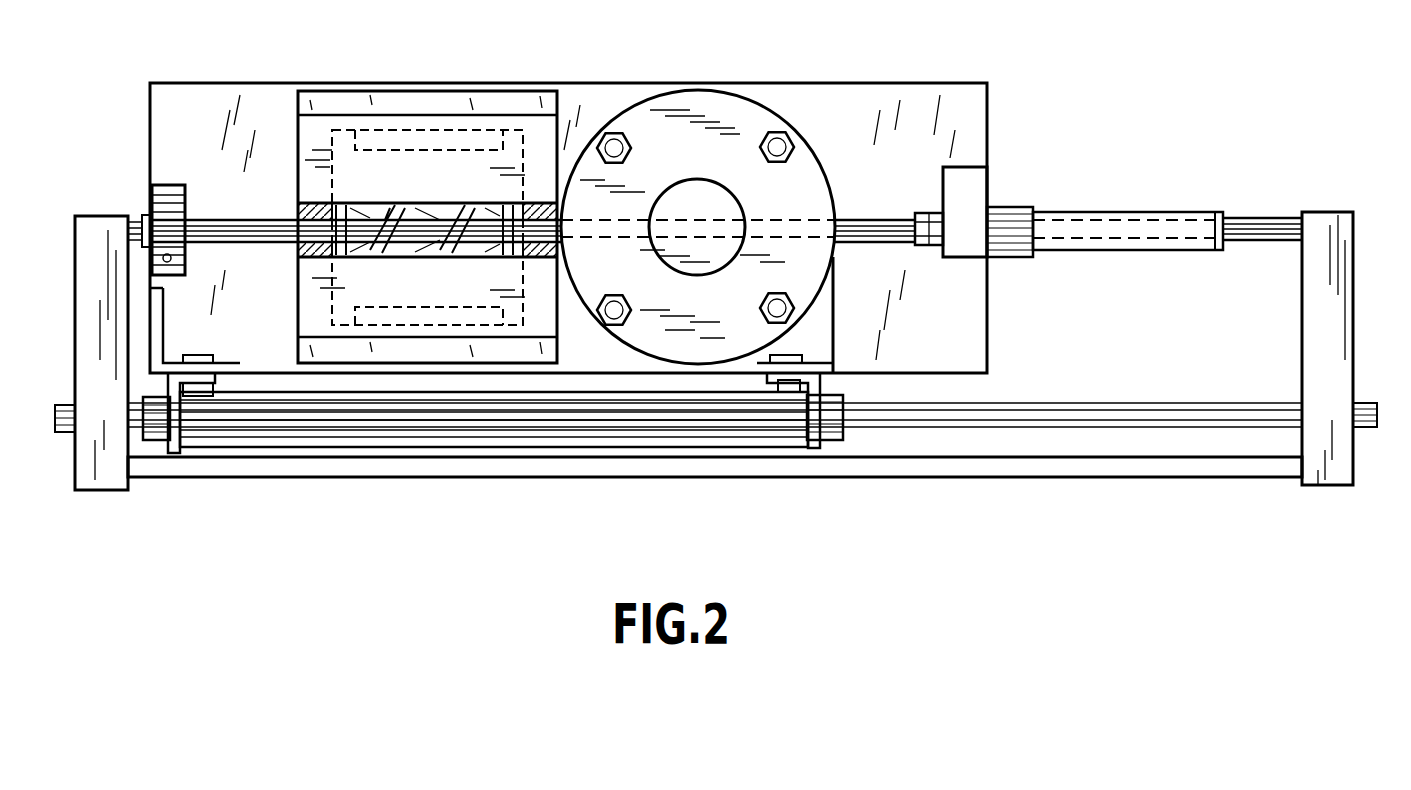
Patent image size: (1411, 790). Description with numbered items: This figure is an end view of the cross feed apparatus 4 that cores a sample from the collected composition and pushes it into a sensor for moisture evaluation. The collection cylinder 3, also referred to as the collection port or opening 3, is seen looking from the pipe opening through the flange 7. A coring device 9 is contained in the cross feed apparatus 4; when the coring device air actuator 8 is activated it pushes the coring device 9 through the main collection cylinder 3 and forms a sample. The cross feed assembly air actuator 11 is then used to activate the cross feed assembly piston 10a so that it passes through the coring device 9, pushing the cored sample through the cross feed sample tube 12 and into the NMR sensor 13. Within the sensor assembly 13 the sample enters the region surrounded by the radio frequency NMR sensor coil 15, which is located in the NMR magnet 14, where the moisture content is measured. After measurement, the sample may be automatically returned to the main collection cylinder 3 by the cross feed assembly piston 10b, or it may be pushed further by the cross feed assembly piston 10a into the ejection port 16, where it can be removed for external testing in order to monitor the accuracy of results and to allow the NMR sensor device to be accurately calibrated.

The collection cylinder 3 is at (712, 247).
The cross feed apparatus 4 is at (1355, 320).
The flange 7 is at (810, 202).
The coring device air actuator 8 is at (1086, 212).
The coring device 9 is at (873, 243).
The cross feed assembly piston 10a is at (1262, 216).
The cross feed assembly piston 10b is at (370, 217).
The cross feed assembly air actuator 11 is at (597, 405).
The cross feed sample tube 12 is at (625, 235).
The NMR sensor 13 is at (568, 65).
The NMR magnet 14 is at (340, 318).
The NMR sensor coil 15 is at (462, 244).
The ejection port 16 is at (240, 218).